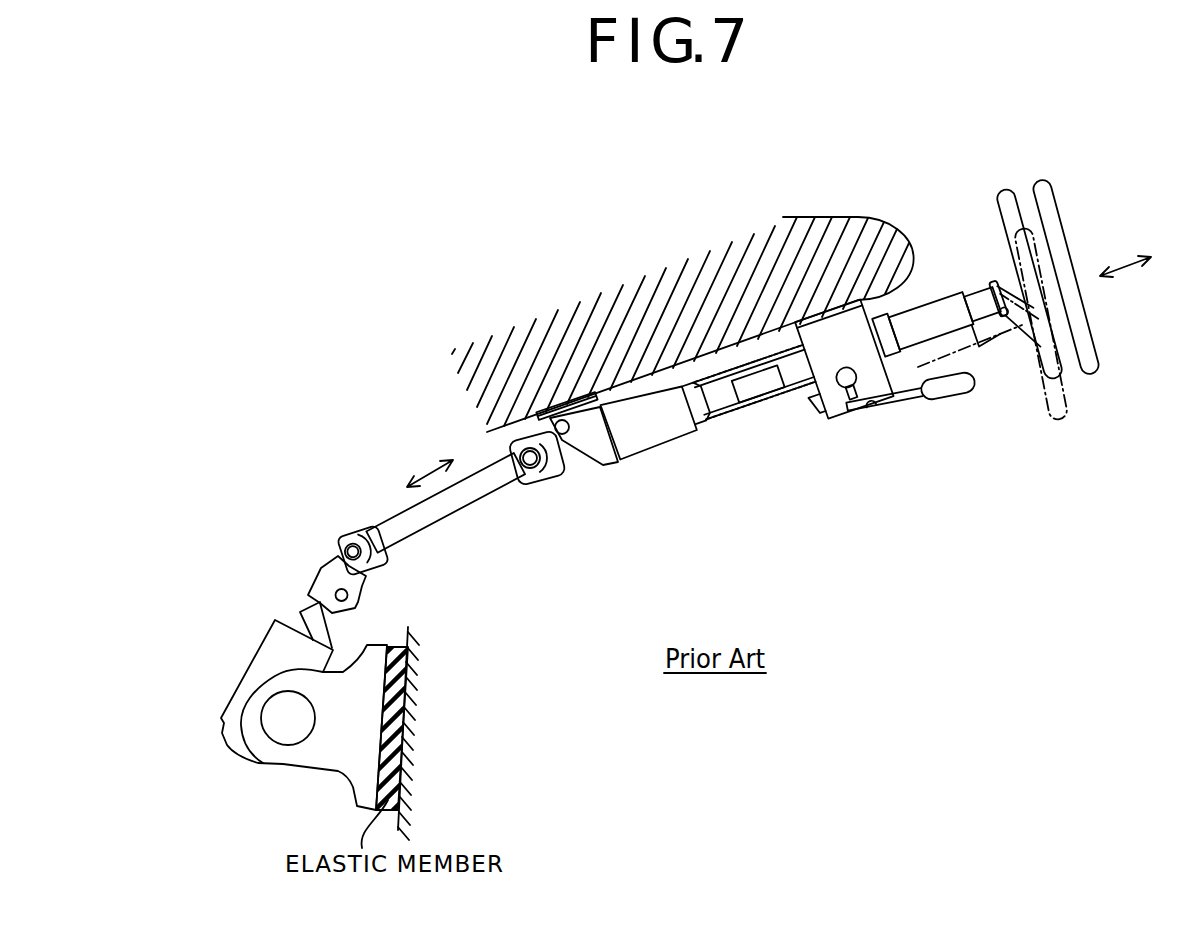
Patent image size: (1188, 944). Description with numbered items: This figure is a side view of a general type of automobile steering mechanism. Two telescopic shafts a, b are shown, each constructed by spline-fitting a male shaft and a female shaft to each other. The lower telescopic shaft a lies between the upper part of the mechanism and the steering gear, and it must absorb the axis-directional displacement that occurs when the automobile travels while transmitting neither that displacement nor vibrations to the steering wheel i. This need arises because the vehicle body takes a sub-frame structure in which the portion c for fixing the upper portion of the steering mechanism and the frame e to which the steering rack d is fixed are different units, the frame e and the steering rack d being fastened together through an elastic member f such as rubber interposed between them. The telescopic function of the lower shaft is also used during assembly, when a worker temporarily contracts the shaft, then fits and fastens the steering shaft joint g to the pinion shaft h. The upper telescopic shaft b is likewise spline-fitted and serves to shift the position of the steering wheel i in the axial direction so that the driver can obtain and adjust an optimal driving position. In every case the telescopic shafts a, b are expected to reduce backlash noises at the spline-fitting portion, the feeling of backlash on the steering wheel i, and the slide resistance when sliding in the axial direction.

The telescopic shaft a is at (484, 512).
The telescopic shaft b is at (784, 400).
The portion for fixing an upper portion of the steering mechanism c is at (718, 292).
The steering rack d is at (275, 708).
The frame e is at (420, 726).
The elastic member f is at (397, 675).
The steering shaft joint g is at (322, 578).
The pinion shaft h is at (300, 611).
The steering wheel i is at (1001, 200).